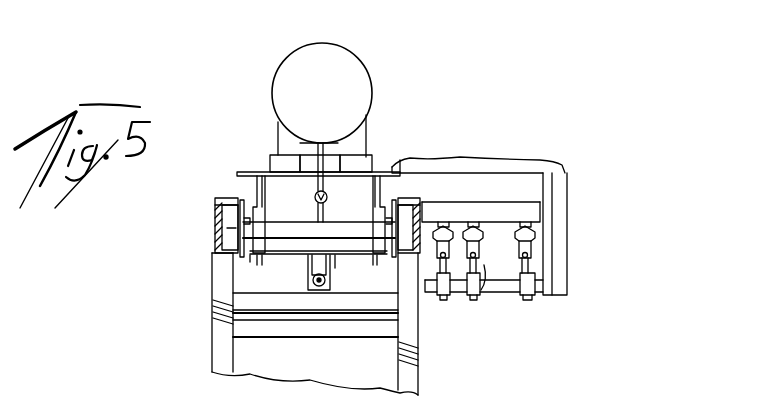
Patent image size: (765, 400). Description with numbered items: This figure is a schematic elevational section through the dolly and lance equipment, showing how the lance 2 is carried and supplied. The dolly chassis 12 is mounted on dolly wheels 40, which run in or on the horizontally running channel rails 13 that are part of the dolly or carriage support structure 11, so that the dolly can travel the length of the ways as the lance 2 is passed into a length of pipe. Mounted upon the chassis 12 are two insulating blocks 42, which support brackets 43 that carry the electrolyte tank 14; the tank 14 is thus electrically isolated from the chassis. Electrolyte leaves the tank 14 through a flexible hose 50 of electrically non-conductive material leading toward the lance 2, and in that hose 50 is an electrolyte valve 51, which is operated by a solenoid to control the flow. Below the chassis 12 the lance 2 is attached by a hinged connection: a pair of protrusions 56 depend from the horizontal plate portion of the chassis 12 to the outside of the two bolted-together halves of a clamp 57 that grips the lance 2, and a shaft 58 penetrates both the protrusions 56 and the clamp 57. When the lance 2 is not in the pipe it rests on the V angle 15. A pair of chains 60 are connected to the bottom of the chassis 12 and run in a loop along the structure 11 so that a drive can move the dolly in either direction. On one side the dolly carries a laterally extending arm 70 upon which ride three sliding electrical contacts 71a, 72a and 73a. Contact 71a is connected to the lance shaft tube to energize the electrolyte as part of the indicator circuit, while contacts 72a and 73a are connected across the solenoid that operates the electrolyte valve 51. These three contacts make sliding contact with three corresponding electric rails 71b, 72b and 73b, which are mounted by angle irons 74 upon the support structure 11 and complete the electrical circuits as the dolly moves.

The electrolyte tank 14 is at (287, 61).
The brackets 43 is at (277, 128).
The insulating blocks 42 is at (270, 160).
The dolly chassis 12 is at (255, 190).
The channel rails 13 is at (212, 205).
The dolly wheels 40 is at (228, 228).
The chains 60 is at (255, 270).
The electrolyte valve 51 is at (314, 196).
The flexible hose 50 is at (314, 212).
The support structure 11 is at (212, 348).
The V angle 15 is at (335, 295).
The clamp 57 is at (307, 284).
The lance 2 is at (330, 280).
The protrusions 56 is at (258, 258).
The shaft 58 is at (312, 268).
The laterally extending arm 70 is at (523, 158).
The electric rail 73b is at (425, 212).
The angle irons 74 is at (464, 205).
The electric rail 71b is at (535, 250).
The sliding electrical contact 71a is at (527, 302).
The sliding electrical contact 72a is at (470, 302).
The electric rail 72b is at (484, 252).
The sliding electrical contact 73a is at (435, 300).